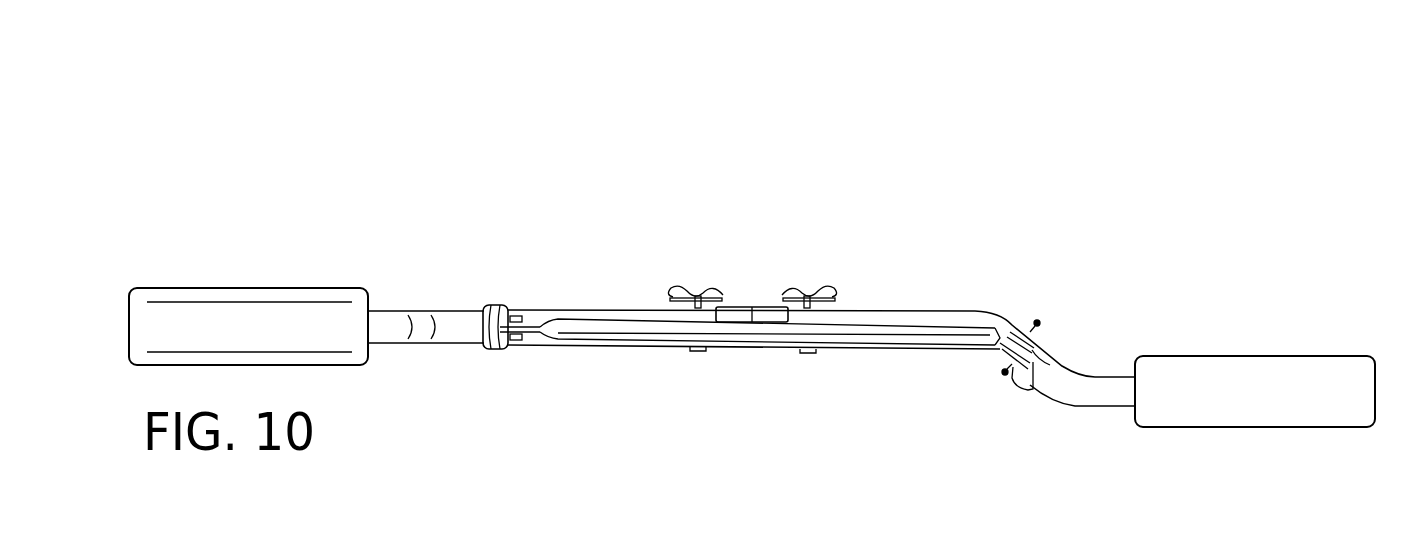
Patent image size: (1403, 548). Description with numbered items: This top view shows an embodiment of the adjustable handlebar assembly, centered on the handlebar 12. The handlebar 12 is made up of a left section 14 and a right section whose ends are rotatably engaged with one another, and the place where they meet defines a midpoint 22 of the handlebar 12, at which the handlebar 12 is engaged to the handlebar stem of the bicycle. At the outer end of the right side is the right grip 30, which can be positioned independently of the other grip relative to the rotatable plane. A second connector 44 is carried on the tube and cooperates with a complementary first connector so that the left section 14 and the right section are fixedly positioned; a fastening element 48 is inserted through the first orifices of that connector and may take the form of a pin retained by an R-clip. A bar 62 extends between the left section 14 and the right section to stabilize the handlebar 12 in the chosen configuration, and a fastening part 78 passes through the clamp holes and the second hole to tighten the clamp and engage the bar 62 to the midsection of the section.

The handlebar 12 is at (953, 303).
The left section 14 is at (421, 293).
The midpoint 22 is at (749, 292).
The right grip 30 is at (1249, 370).
The second connector 44 is at (820, 389).
The fastening element 48 is at (810, 285).
The bar 62 is at (594, 306).
The fastening part 78 is at (1046, 311).